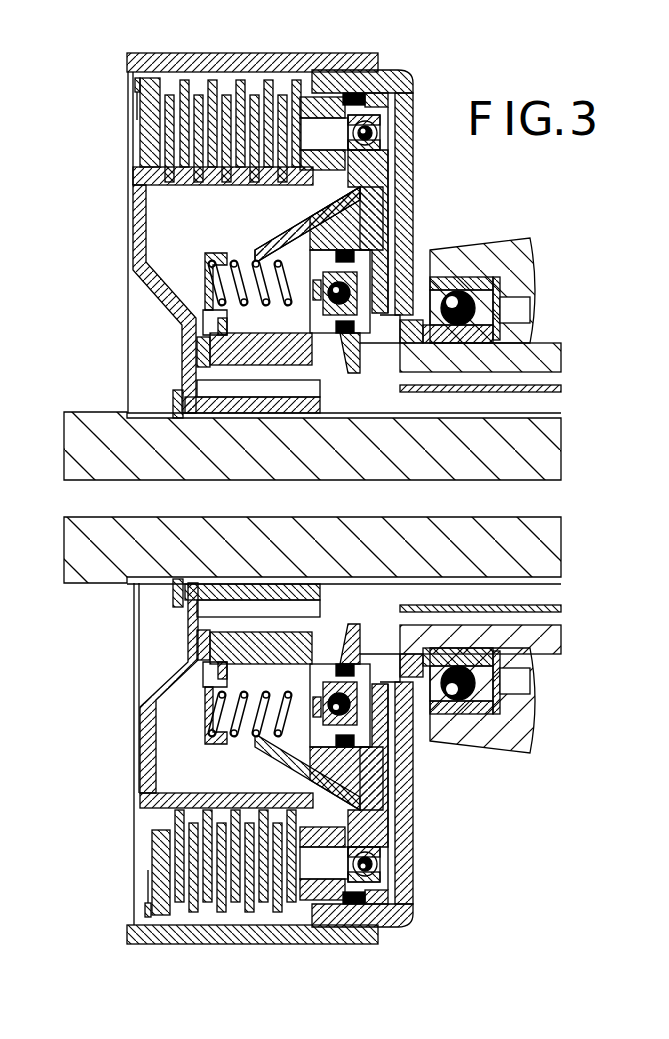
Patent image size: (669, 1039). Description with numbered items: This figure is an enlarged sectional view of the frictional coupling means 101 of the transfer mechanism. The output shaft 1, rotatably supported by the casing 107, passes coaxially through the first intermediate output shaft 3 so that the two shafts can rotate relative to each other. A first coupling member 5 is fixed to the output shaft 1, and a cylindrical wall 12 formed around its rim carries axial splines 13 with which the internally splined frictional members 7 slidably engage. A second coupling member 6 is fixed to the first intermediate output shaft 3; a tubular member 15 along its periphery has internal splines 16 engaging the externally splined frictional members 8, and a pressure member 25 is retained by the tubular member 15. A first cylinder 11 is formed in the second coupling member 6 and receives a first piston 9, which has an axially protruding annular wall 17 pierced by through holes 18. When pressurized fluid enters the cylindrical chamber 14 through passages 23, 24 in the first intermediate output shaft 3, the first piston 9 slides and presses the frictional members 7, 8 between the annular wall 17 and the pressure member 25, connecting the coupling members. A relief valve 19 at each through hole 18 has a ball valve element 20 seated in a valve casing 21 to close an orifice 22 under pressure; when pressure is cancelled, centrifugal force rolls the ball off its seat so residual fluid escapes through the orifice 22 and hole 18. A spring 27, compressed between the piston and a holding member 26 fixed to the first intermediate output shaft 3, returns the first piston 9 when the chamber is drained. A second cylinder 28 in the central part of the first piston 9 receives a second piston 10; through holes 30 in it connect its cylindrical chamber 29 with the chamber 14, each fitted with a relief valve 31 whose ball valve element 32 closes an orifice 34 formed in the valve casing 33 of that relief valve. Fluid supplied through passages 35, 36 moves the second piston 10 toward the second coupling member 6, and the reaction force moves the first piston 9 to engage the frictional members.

The output shaft 1 is at (78, 438).
The first intermediate output shaft 3 is at (545, 362).
The first coupling member 5 is at (145, 246).
The second coupling member 6 is at (405, 105).
The frictional members 7 is at (170, 95).
The frictional members 8 is at (212, 80).
The first piston 9 is at (375, 178).
The second piston 10 is at (330, 252).
The first cylinder 11 is at (353, 96).
The cylindrical wall 12 is at (195, 186).
The splines 13 is at (148, 180).
The cylindrical chamber 14 is at (393, 97).
The tubular member 15 is at (283, 63).
The internal splines 16 is at (135, 82).
The annular wall 17 is at (320, 105).
The through holes 18 is at (327, 862).
The relief valve 19 is at (380, 134).
The ball valve element 20 is at (385, 864).
The valve casing 21 is at (392, 840).
The orifice 22 is at (352, 876).
The passage 23 is at (483, 613).
The passage 24 is at (400, 618).
The pressure member 25 is at (160, 878).
The holding member 26 is at (206, 286).
The spring 27 is at (247, 343).
The second cylinder 28 is at (345, 250).
The cylindrical chamber 29 is at (258, 498).
The through holes 30 is at (396, 326).
The relief valve 31 is at (262, 248).
The ball valve element 32 is at (247, 260).
The pressure wedge 33 is at (330, 243).
The orifice 34 is at (361, 335).
The passage 35 is at (502, 400).
The passage 36 is at (373, 402).
The frictional coupling means 101 is at (115, 385).
The casing 107 is at (518, 270).